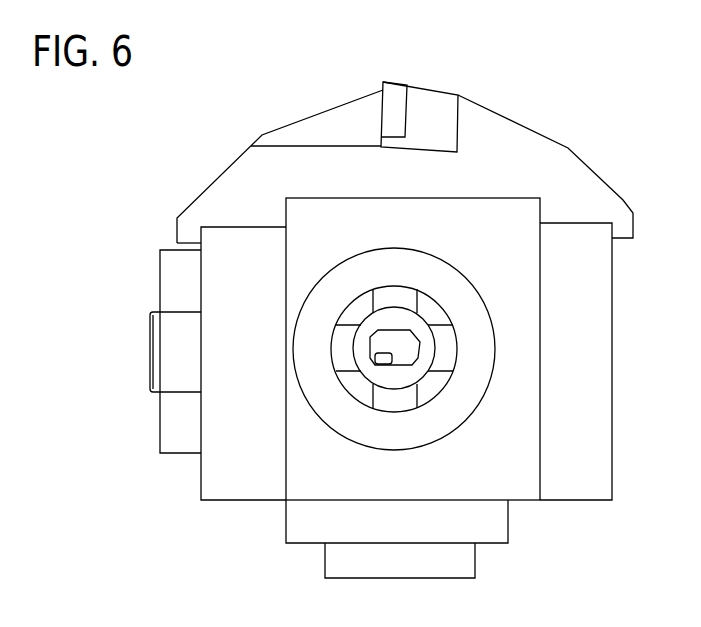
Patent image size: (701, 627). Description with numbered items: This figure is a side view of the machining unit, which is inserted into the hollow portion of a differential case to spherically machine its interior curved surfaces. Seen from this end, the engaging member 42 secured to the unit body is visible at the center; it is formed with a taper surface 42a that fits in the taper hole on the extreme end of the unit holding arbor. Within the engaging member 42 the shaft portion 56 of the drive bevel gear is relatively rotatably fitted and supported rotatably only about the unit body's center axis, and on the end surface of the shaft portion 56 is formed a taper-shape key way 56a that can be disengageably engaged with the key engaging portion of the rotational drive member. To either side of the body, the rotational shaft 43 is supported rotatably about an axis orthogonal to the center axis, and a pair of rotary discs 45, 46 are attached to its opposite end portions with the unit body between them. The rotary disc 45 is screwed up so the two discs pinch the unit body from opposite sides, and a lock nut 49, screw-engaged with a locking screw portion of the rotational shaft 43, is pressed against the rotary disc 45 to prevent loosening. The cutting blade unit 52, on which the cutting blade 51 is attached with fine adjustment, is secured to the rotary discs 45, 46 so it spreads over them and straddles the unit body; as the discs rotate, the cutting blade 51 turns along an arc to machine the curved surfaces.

The engaging member 42 is at (352, 271).
The taper surface 42a is at (440, 378).
The rotational shaft 43 is at (157, 353).
The rotary disc 45 is at (242, 490).
The rotary disc 46 is at (578, 487).
The lock nut 49 is at (172, 421).
The cutting blade 51 is at (397, 98).
The cutting blade unit 52 is at (512, 138).
The shaft portion 56 is at (420, 322).
The key way 56a is at (370, 355).